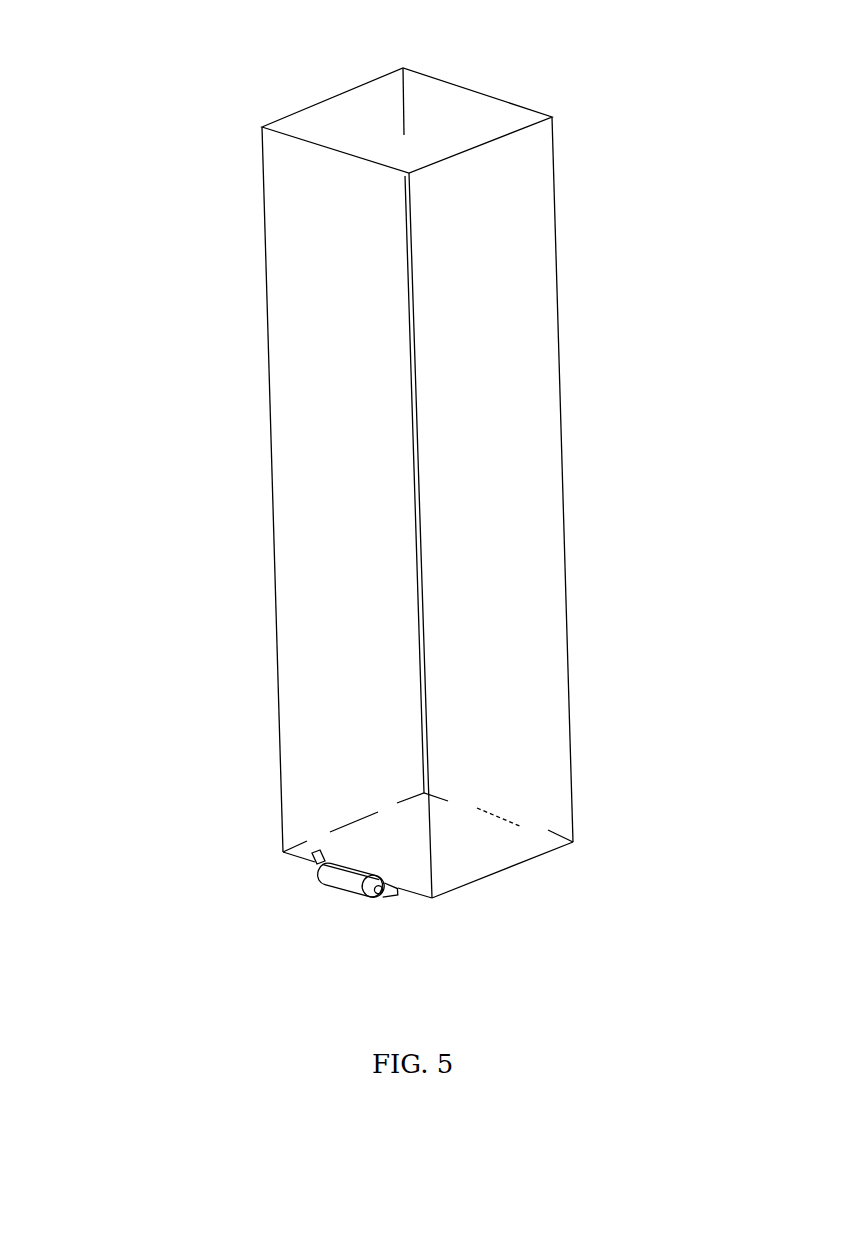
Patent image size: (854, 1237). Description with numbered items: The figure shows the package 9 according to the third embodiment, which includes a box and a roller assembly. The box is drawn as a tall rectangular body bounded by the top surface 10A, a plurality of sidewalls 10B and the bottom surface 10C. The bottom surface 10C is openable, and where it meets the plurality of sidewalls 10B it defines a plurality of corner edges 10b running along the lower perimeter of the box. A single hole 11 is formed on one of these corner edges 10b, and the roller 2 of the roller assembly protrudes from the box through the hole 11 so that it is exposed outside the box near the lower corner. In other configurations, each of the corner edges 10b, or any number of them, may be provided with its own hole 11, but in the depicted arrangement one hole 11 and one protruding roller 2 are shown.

The package 9 is at (235, 143).
The top surface 10A is at (487, 115).
The sidewalls 10B is at (320, 342).
The corner edges 10b is at (405, 802).
The bottom surface 10C is at (370, 833).
The hole 11 is at (310, 862).
The roller 2 is at (338, 880).